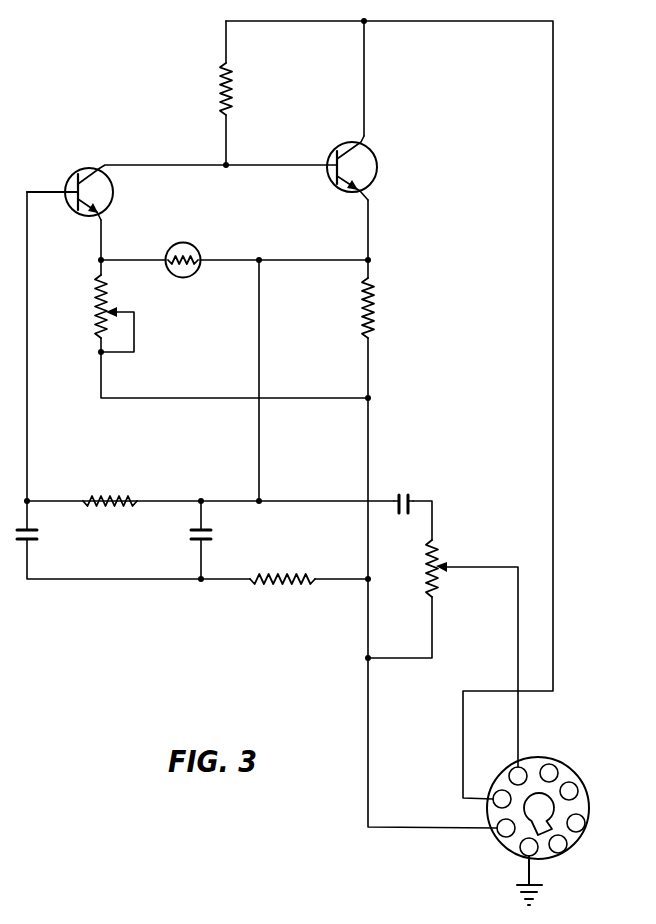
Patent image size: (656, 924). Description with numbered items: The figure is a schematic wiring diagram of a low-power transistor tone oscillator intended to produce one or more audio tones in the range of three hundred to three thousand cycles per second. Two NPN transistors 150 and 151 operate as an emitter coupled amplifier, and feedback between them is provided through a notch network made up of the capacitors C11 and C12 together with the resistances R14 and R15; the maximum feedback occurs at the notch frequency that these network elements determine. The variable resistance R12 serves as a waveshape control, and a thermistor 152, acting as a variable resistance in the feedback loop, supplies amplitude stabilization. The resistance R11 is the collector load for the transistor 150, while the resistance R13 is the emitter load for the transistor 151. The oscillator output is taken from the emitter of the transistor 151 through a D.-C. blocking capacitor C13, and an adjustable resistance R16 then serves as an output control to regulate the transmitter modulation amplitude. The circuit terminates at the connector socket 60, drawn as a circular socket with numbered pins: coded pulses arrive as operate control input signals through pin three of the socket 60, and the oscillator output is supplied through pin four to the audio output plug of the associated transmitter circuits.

The resistance R11 is at (232, 83).
The NPN transistor 150 is at (113, 192).
The NPN transistor 151 is at (377, 167).
The thermistor 152 is at (190, 243).
The variable resistance R12 is at (97, 297).
The resistance R13 is at (362, 305).
The resistance R14 is at (130, 495).
The capacitor C11 is at (39, 535).
The capacitor C12 is at (213, 538).
The resistance R15 is at (273, 577).
The D.-C. blocking capacitor C13 is at (406, 490).
The adjustable resistance R16 is at (427, 572).
The connector socket 60 is at (570, 767).